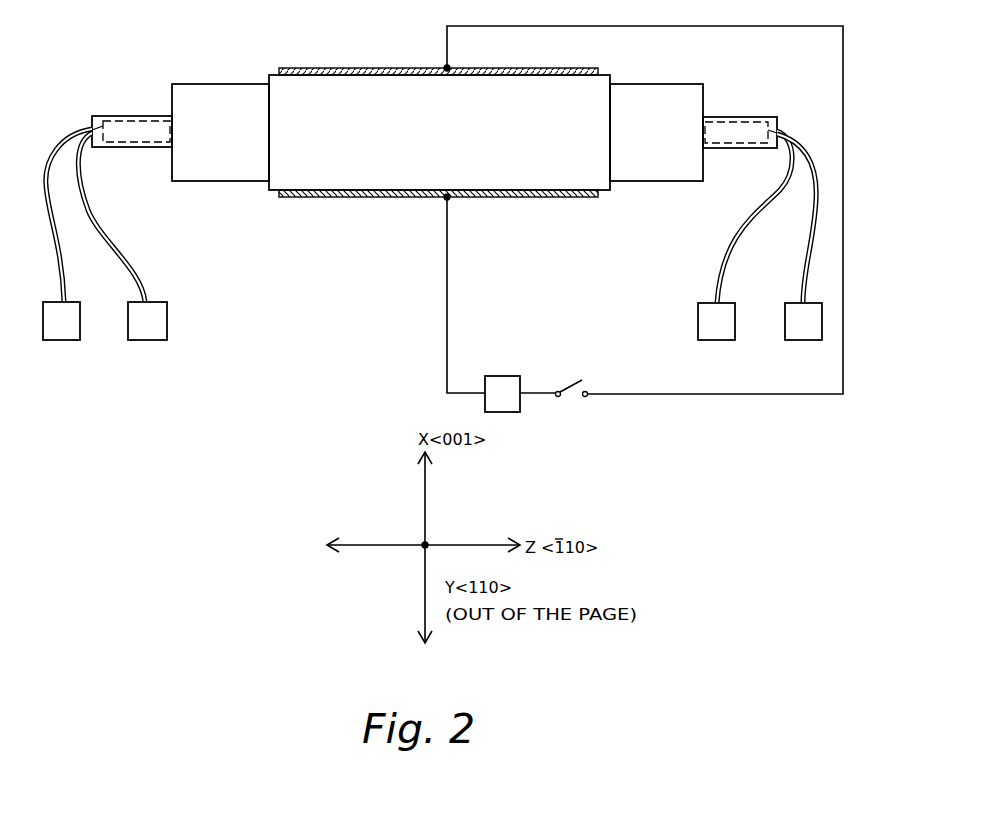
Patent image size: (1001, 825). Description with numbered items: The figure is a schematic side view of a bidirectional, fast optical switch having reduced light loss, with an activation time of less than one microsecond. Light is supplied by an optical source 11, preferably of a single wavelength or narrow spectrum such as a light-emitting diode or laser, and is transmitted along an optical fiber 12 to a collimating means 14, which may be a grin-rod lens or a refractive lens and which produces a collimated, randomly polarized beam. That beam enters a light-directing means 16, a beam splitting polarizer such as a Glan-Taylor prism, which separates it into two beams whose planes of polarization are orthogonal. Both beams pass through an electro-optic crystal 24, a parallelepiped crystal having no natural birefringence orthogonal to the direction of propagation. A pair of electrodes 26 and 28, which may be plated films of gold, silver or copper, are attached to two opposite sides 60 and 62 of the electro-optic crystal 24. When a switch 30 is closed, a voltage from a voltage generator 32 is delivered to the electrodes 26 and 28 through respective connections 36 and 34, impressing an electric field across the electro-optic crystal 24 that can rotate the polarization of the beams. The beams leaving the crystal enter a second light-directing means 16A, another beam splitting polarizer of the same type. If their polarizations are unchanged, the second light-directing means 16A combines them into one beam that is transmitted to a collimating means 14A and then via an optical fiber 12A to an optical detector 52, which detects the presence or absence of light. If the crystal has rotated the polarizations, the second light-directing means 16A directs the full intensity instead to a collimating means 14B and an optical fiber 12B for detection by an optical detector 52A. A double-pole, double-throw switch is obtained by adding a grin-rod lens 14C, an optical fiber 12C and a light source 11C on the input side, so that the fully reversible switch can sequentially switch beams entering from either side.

The optical source 11 is at (60, 341).
The light source 11C is at (145, 341).
The optical fiber 12 is at (50, 243).
The optical fiber 12A is at (806, 253).
The optical fiber 12B is at (722, 256).
The optical fiber 12C is at (124, 243).
The collimating means 14 is at (98, 116).
The collimating means 14A is at (772, 117).
The collimating means 14B is at (740, 117).
The grin-rod lens 14C is at (148, 121).
The light-directing means 16 is at (233, 84).
The second light-directing means 16A is at (668, 84).
The electro-optic crystal 24 is at (458, 148).
The electrode 26 is at (350, 68).
The electrode 28 is at (345, 197).
The switch 30 is at (569, 385).
The voltage generator 32 is at (503, 376).
The connection 34 is at (447, 322).
The connection 36 is at (629, 393).
The optical detector 52 is at (804, 341).
The optical detector 52A is at (720, 341).
The side of electro-optic crystal 60 is at (416, 68).
The side of electro-optic crystal 62 is at (404, 197).